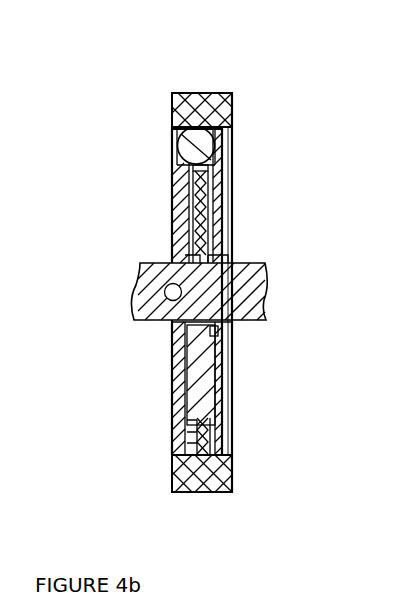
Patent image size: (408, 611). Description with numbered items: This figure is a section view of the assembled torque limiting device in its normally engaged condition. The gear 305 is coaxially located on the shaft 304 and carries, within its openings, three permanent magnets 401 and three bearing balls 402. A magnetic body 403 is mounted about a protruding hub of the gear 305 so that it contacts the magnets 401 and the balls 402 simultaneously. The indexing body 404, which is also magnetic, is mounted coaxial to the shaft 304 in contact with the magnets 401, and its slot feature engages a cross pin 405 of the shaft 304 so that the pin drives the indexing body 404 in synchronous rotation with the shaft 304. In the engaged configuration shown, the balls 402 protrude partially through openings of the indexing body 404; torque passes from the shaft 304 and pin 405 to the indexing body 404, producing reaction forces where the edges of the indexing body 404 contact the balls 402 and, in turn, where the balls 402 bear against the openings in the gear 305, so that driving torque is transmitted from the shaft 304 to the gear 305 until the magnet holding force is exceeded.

The gear 305 is at (236, 89).
The bearing balls 402 is at (187, 140).
The indexing body 404 is at (166, 197).
The magnetic body 403 is at (223, 218).
The shaft 304 is at (130, 288).
The cross pin 405 is at (174, 294).
The permanent magnets 401 is at (209, 380).